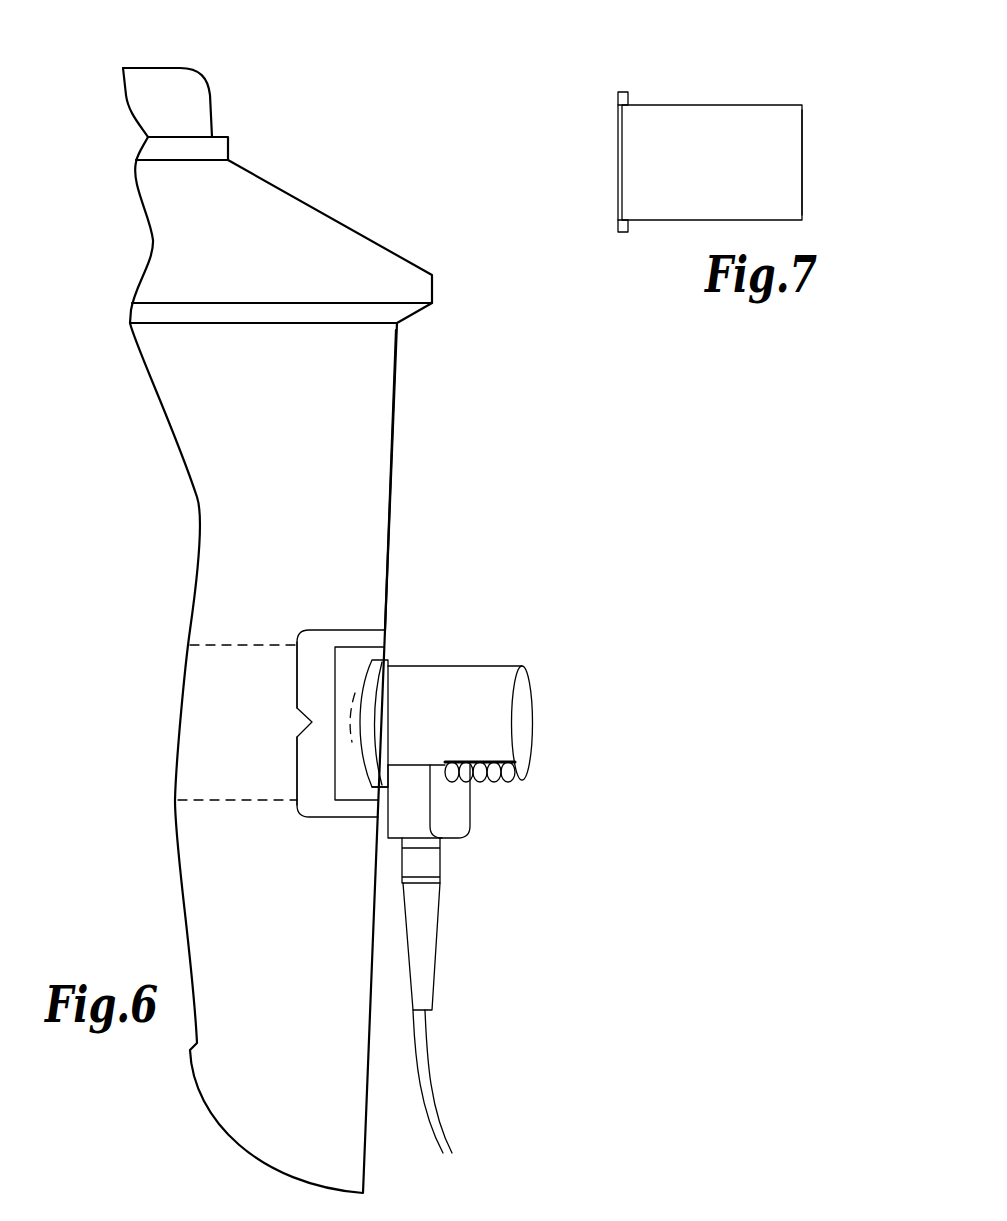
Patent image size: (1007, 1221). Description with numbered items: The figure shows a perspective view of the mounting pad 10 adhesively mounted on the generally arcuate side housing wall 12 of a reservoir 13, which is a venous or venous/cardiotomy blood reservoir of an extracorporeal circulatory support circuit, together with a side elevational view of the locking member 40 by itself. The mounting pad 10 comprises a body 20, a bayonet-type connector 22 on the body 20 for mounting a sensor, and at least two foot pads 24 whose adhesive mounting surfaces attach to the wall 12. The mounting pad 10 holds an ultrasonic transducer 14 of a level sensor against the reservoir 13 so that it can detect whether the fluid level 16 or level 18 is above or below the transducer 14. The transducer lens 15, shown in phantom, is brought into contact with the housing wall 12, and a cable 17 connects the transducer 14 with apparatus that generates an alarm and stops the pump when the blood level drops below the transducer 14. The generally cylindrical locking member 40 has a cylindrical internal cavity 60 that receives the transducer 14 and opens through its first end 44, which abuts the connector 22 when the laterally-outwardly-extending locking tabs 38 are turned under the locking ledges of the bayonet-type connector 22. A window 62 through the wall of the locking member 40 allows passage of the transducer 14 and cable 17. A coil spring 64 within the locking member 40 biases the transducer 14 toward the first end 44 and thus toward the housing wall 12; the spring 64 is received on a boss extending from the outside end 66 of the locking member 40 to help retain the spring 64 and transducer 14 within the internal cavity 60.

In FIG. 6, the mounting pad 10 is at (448, 866).
In FIG. 6, the housing wall 12 is at (392, 468).
In FIG. 6, the reservoir 13 is at (399, 410).
In FIG. 6, the ultrasonic transducer 14 is at (413, 822).
In FIG. 6, the transducer lens 15 is at (358, 742).
In FIG. 6, the level 16 is at (225, 643).
In FIG. 6, the cable 17 is at (430, 1073).
In FIG. 6, the level 18 is at (208, 798).
In FIG. 6, the body 20 is at (345, 640).
In FIG. 6, the bayonet-type connector 22 is at (363, 774).
In FIG. 6, the foot pad 24 is at (308, 685).
In FIG. 7, the locking tab 38 is at (628, 92).
In FIG. 6, the locking member 40 is at (501, 680).
In FIG. 7, the locking member 40 is at (715, 160).
In FIG. 6, the first end 44 is at (397, 662).
In FIG. 7, the first end 44 is at (618, 158).
In FIG. 6, the internal cavity 60 is at (516, 785).
In FIG. 6, the window 62 is at (510, 767).
In FIG. 6, the coil spring 64 is at (465, 783).
In FIG. 6, the outside end 66 is at (527, 698).
In FIG. 7, the outside end 66 is at (802, 150).